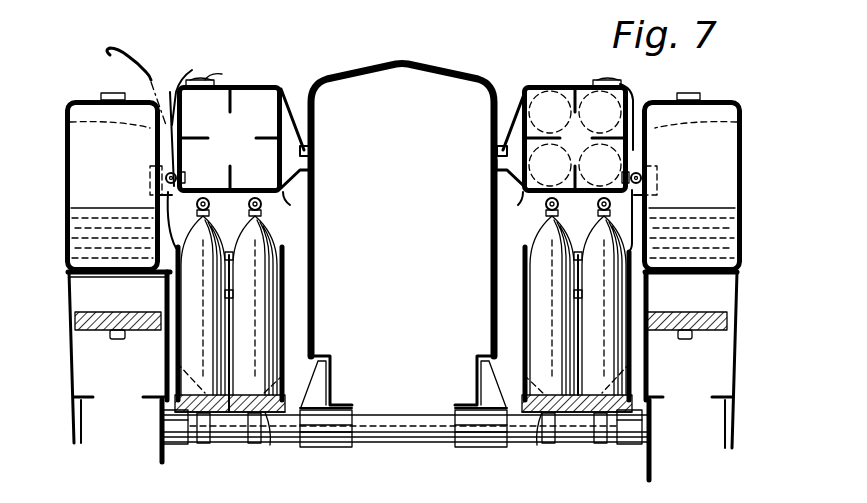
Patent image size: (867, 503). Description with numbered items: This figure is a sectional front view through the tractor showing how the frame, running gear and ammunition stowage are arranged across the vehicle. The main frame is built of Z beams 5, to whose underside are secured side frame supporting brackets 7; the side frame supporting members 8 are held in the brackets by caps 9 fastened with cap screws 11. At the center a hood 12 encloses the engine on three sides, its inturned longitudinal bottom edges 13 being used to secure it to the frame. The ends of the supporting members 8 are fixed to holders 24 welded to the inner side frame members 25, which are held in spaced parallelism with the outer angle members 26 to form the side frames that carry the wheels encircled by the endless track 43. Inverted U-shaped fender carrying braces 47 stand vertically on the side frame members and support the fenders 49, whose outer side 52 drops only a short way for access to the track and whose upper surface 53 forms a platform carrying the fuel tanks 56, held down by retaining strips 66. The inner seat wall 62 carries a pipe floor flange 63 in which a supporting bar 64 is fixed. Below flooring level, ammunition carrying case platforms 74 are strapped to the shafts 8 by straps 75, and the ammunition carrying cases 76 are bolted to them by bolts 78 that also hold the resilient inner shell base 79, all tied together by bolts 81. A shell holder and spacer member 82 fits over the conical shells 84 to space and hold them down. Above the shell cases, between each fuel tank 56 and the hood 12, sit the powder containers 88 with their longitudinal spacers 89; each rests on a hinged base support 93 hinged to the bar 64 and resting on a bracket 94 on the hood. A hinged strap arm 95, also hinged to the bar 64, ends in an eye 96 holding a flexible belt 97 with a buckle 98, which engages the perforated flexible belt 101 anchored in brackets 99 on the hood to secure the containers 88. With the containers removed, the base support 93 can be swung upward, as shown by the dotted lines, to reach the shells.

The Z beam 5 is at (338, 396).
The side frame supporting bracket 7 is at (496, 390).
The side frame supporting member 8 is at (405, 440).
The cap 9 is at (316, 447).
The cap screw 11 is at (350, 447).
The hood 12 is at (436, 70).
The longitudinal bottom edge 13 is at (318, 358).
The holder 24 is at (174, 446).
The inner side frame member 25 is at (158, 425).
The outer side frame angle member 26 is at (82, 432).
The endless track 43 is at (105, 311).
The fender carrying brace 47 is at (165, 363).
The fender 49 is at (167, 293).
The outer side of fender 52 is at (64, 274).
The upper surface of fender 53 is at (86, 309).
The fuel tank 56 is at (403, 207).
The inner seat wall 62 is at (188, 186).
The pipe floor flange 63 is at (165, 196).
The supporting bar 64 is at (180, 175).
The retaining strip 66 is at (63, 182).
The ammunition carrying case platform 74 is at (264, 420).
The strap 75 is at (209, 446).
The ammunition carrying case 76 is at (284, 316).
The bolt 78 is at (243, 392).
The inner shell base 79 is at (242, 393).
The bolt 81 is at (230, 393).
The shell holder and spacer member 82 is at (286, 271).
The shell 84 is at (258, 230).
The powder container 88 is at (261, 85).
The longitudinal spacer 89 is at (402, 139).
The hinged base support 93 is at (128, 60).
The bracket 94 is at (312, 169).
The hinged strap arm 95 is at (171, 159).
The eye 96 is at (652, 95).
The flexible belt 97 is at (212, 82).
The buckle 98 is at (220, 82).
The bracket 99 is at (312, 152).
The flexible belt 101 is at (306, 124).